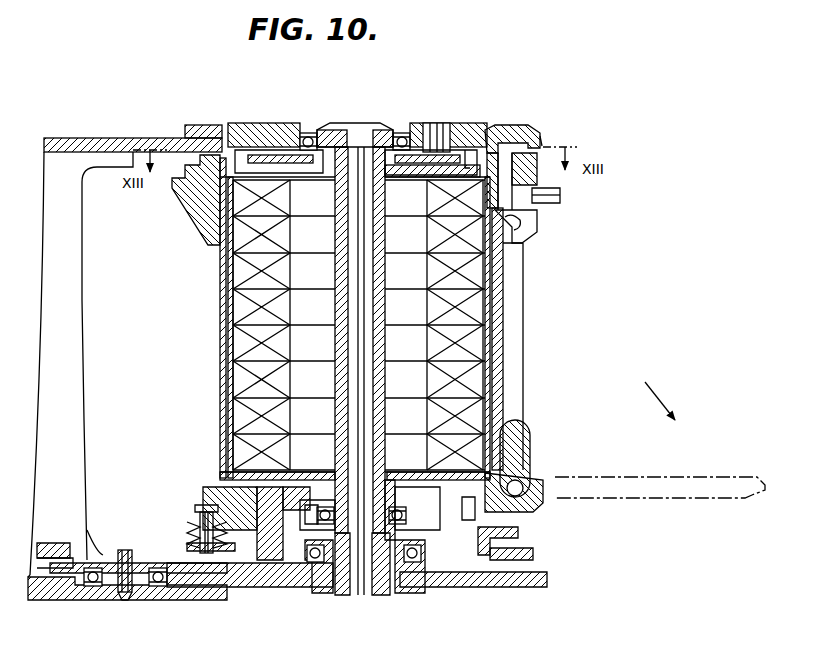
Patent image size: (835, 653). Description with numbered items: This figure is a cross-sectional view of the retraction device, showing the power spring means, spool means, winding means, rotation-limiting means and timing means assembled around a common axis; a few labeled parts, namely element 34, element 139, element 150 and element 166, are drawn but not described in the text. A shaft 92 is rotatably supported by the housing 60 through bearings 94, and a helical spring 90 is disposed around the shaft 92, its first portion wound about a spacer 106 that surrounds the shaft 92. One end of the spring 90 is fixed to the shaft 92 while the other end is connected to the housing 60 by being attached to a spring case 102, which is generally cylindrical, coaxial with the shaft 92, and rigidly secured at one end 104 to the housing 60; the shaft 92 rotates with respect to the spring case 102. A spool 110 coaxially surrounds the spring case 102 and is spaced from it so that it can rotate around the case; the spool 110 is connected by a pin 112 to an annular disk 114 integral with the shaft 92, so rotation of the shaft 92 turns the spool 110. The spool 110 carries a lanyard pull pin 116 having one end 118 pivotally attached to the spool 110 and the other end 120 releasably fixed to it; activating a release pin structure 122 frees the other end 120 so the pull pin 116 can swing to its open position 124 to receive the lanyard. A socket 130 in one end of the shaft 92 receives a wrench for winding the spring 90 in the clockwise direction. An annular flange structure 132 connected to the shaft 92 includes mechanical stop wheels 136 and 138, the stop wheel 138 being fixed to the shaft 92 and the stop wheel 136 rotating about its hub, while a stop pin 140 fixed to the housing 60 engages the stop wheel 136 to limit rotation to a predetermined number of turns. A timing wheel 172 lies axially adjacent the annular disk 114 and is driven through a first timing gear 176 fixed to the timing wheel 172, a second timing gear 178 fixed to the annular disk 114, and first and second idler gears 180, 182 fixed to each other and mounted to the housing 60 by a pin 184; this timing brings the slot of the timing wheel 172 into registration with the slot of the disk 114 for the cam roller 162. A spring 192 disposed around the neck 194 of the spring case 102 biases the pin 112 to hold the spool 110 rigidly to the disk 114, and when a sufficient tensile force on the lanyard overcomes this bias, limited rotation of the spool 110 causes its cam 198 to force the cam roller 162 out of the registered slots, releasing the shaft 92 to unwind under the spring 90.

The housing 60 is at (84, 136).
The shaft hub 34 is at (356, 127).
The helical spring 90 is at (478, 300).
The shaft 92 is at (380, 268).
The bearings 94 is at (306, 132).
The spring case 102 is at (400, 487).
The end of spring case 104 is at (186, 126).
The spacer 106 is at (300, 280).
The spool 110 is at (186, 222).
The pin 112 is at (270, 555).
The annular disk 114 is at (297, 555).
The lanyard pull pin 116 is at (527, 377).
The one end of pull pin 118 is at (517, 463).
The other end of pull pin 120 is at (515, 245).
The release pin structure 122 is at (562, 197).
The open position 124 is at (697, 478).
The socket 130 is at (362, 580).
The annular flange structure 132 is at (243, 150).
The stop wheel 136 is at (460, 150).
The stop wheel 138 is at (420, 178).
The seal lip 139 is at (472, 152).
The stop pin 140 is at (430, 125).
The section line 150 is at (544, 146).
The cam roller 162 is at (195, 520).
The bolt 166 is at (200, 508).
The timing wheel 172 is at (520, 531).
The first timing gear 176 is at (535, 556).
The second timing gear 178 is at (520, 585).
The first idler gear 180 is at (72, 556).
The second idler gear 182 is at (183, 590).
The pin 184 is at (120, 595).
The spring 192 is at (468, 522).
The neck of spring case 194 is at (318, 500).
The cam 198 is at (230, 495).